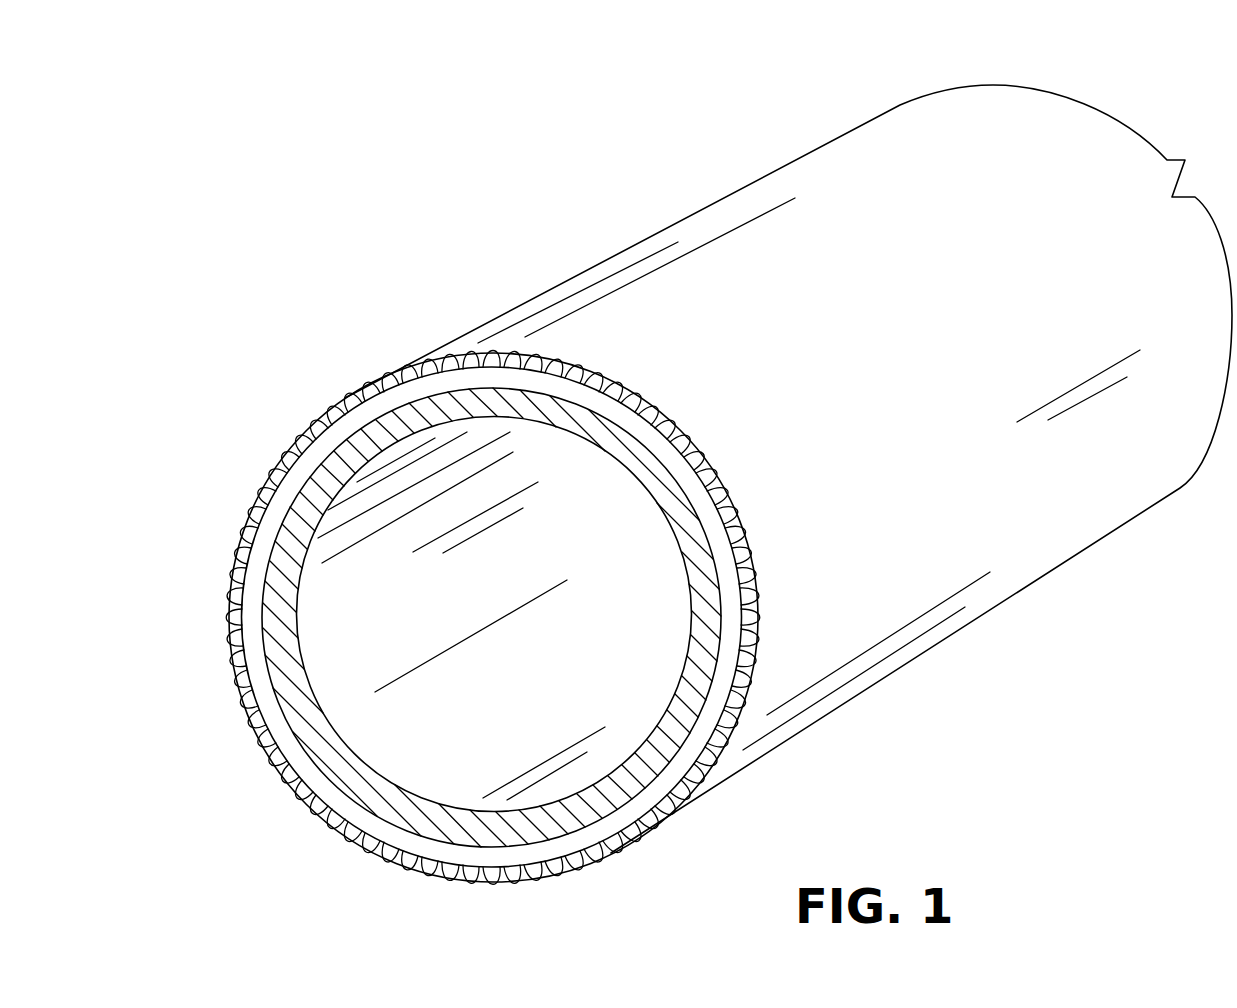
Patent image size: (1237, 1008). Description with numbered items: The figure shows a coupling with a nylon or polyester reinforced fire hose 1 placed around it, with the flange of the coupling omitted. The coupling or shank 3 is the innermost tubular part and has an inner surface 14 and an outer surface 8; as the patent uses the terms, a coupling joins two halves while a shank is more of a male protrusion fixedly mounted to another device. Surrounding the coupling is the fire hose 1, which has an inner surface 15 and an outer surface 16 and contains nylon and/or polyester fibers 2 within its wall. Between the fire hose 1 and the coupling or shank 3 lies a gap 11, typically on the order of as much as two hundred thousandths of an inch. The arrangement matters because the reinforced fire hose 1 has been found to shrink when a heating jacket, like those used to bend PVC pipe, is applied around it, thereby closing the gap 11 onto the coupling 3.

The nylon reinforced fire hose 1 is at (832, 233).
The nylon and/or polyester fibers 2 is at (612, 386).
The coupling or shank 3 is at (418, 798).
The outer surface of the coupling 8 is at (640, 440).
The gap 11 is at (712, 522).
The inner surface of the coupling 14 is at (583, 440).
The inner surface of the fire hose 15 is at (737, 557).
The outer surface of the fire hose 16 is at (707, 458).